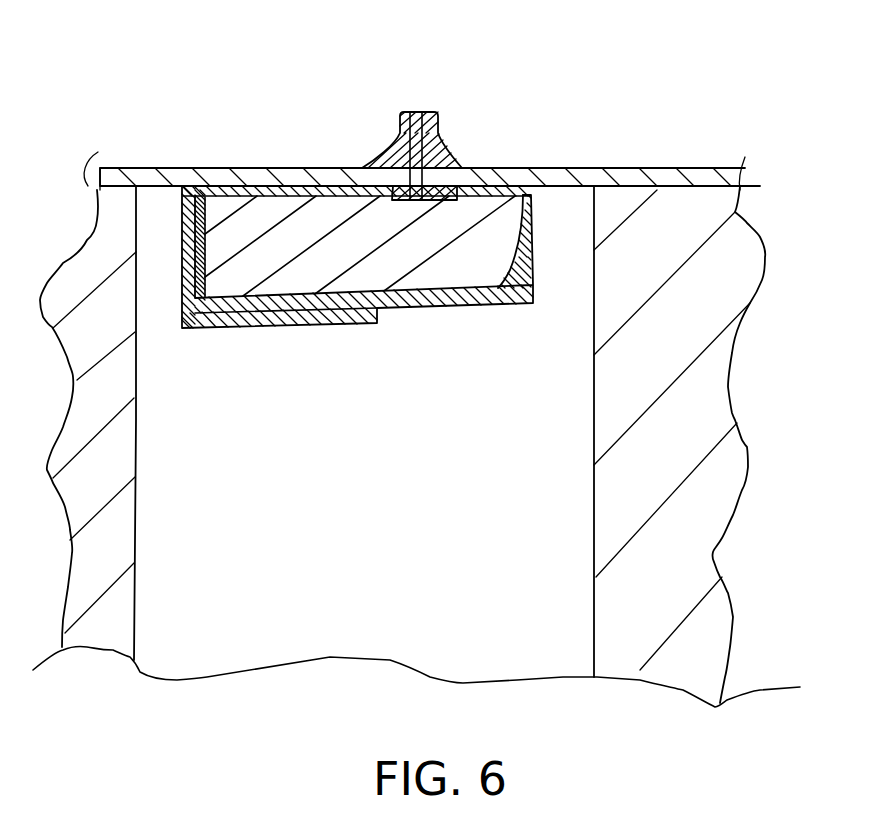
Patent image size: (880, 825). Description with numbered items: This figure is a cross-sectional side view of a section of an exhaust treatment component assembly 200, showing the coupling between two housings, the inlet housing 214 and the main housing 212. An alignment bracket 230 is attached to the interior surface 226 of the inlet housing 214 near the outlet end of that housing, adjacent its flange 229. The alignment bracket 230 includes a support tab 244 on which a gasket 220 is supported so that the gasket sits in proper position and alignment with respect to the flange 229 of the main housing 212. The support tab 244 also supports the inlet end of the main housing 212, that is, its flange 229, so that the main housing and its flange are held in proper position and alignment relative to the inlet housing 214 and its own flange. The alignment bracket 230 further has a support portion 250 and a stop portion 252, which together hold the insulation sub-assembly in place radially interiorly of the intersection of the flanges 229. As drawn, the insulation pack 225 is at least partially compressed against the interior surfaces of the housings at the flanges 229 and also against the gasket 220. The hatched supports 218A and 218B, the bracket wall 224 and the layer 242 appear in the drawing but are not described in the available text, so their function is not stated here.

The exhaust treatment component assembly 200 is at (688, 97).
The main housing 212 is at (542, 177).
The inlet housing 214 is at (223, 165).
The first support 218A is at (627, 668).
The second support 218B is at (107, 620).
The gasket 220 is at (415, 112).
The bracket 224 is at (453, 312).
The insulation pack 225 is at (503, 300).
The interior surface 226 is at (166, 187).
The flange 229 is at (398, 132).
The alignment bracket 230 is at (238, 332).
The adhesive layer 242 is at (310, 190).
The support tab 244 is at (443, 170).
The support portion 250 is at (295, 332).
The stop portion 252 is at (185, 298).